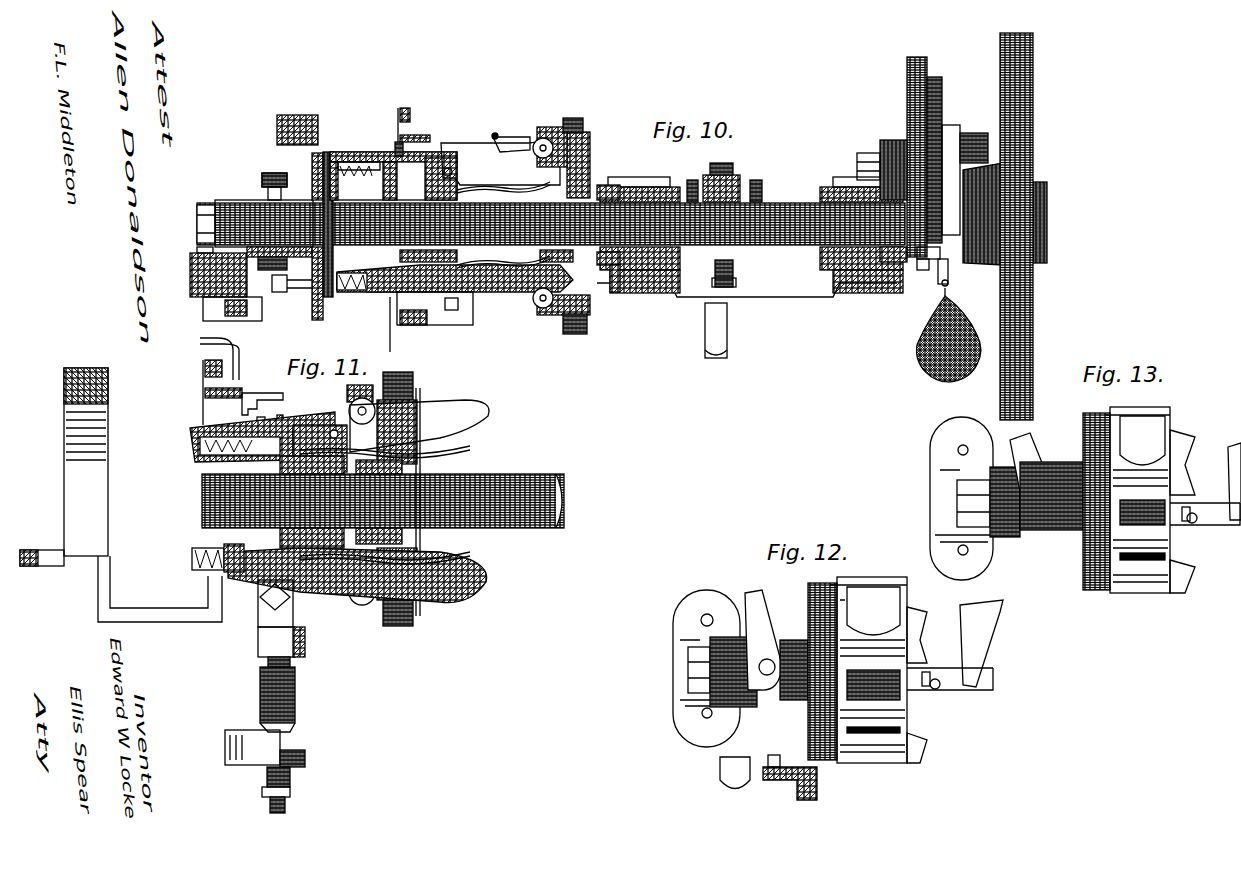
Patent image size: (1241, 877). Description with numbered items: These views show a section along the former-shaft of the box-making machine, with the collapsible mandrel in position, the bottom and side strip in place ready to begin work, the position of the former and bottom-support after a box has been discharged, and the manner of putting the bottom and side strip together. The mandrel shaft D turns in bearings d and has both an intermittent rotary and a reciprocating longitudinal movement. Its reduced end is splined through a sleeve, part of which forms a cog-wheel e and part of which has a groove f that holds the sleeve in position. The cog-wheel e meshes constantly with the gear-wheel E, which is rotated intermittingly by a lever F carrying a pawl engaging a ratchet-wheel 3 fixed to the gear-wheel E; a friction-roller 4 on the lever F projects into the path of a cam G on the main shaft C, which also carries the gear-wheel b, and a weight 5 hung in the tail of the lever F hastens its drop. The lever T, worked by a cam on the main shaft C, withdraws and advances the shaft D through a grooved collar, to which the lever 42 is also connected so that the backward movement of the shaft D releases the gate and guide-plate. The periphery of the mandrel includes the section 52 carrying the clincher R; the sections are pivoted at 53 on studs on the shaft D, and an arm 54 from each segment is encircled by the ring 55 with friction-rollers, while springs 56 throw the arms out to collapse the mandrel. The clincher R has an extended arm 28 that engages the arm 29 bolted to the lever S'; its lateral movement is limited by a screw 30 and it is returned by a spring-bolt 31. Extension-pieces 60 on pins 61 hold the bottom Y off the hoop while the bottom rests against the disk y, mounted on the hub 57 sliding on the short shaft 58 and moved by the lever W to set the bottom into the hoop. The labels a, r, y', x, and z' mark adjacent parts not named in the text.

In FIG. 10, the mandrel shaft D is at (470, 240).
In FIG. 11, the mandrel shaft D is at (478, 482).
In FIG. 10, the short shaft 58 is at (264, 223).
In FIG. 10, the frame bracket a is at (185, 270).
In FIG. 10, the bearings d is at (642, 186).
In FIG. 10, the lever T is at (728, 172).
In FIG. 10, the lever 42 is at (734, 280).
In FIG. 10, the extension-pieces 60 is at (726, 330).
In FIG. 11, the extension-pieces 60 is at (196, 568).
In FIG. 10, the pins 61 is at (372, 294).
In FIG. 11, the pins 61 is at (205, 550).
In FIG. 10, the housing post r is at (287, 116).
In FIG. 10, the disk y is at (312, 243).
In FIG. 12, the disk y is at (858, 670).
In FIG. 13, the disk y is at (1127, 500).
In FIG. 13, the plate y' is at (1062, 558).
In FIG. 10, the lever W is at (274, 172).
In FIG. 12, the lever W is at (755, 592).
In FIG. 13, the lever W is at (1010, 445).
In FIG. 10, the hub 57 is at (262, 184).
In FIG. 12, the hub 57 is at (795, 700).
In FIG. 13, the hub 57 is at (1040, 540).
In FIG. 10, the mandrel section 52 is at (393, 176).
In FIG. 10, the spring-bolt 31 is at (357, 181).
In FIG. 11, the spring-bolt 31 is at (205, 452).
In FIG. 10, the clincher R is at (366, 160).
In FIG. 11, the clincher R is at (198, 432).
In FIG. 12, the clincher R is at (915, 680).
In FIG. 13, the clincher R is at (1180, 510).
In FIG. 10, the extended arm 28 is at (423, 133).
In FIG. 11, the extended arm 28 is at (289, 412).
In FIG. 12, the extended arm 28 is at (940, 688).
In FIG. 13, the extended arm 28 is at (1200, 524).
In FIG. 10, the arm 29 is at (470, 144).
In FIG. 11, the arm 29 is at (283, 400).
In FIG. 10, the screw 30 is at (400, 152).
In FIG. 11, the screw 30 is at (289, 416).
In FIG. 12, the screw 30 is at (938, 671).
In FIG. 13, the screw 30 is at (1200, 505).
In FIG. 10, the lever S' is at (511, 131).
In FIG. 11, the lever S' is at (244, 392).
In FIG. 12, the lever S' is at (975, 643).
In FIG. 13, the lever S' is at (1222, 481).
In FIG. 10, the pivots 53 is at (452, 172).
In FIG. 11, the pivots 53 is at (340, 434).
In FIG. 10, the arm 54 is at (455, 244).
In FIG. 11, the arm 54 is at (436, 420).
In FIG. 10, the ring 55 is at (580, 126).
In FIG. 11, the ring 55 is at (412, 398).
In FIG. 10, the springs 56 is at (503, 225).
In FIG. 11, the springs 56 is at (385, 505).
In FIG. 10, the knob x is at (573, 118).
In FIG. 10, the gear-wheel E is at (906, 85).
In FIG. 10, the ratchet-wheel 3 is at (940, 110).
In FIG. 10, the lever F is at (950, 140).
In FIG. 10, the friction-roller 4 is at (974, 140).
In FIG. 10, the cam G is at (980, 205).
In FIG. 10, the main shaft C is at (970, 230).
In FIG. 10, the gear-wheel b is at (1030, 338).
In FIG. 10, the cog-wheel e is at (921, 272).
In FIG. 10, the groove f is at (940, 272).
In FIG. 10, the weight 5 is at (935, 350).
In FIG. 12, the bottom Y is at (822, 610).
In FIG. 13, the bottom Y is at (1095, 440).
In FIG. 12, the bracket z' is at (780, 777).